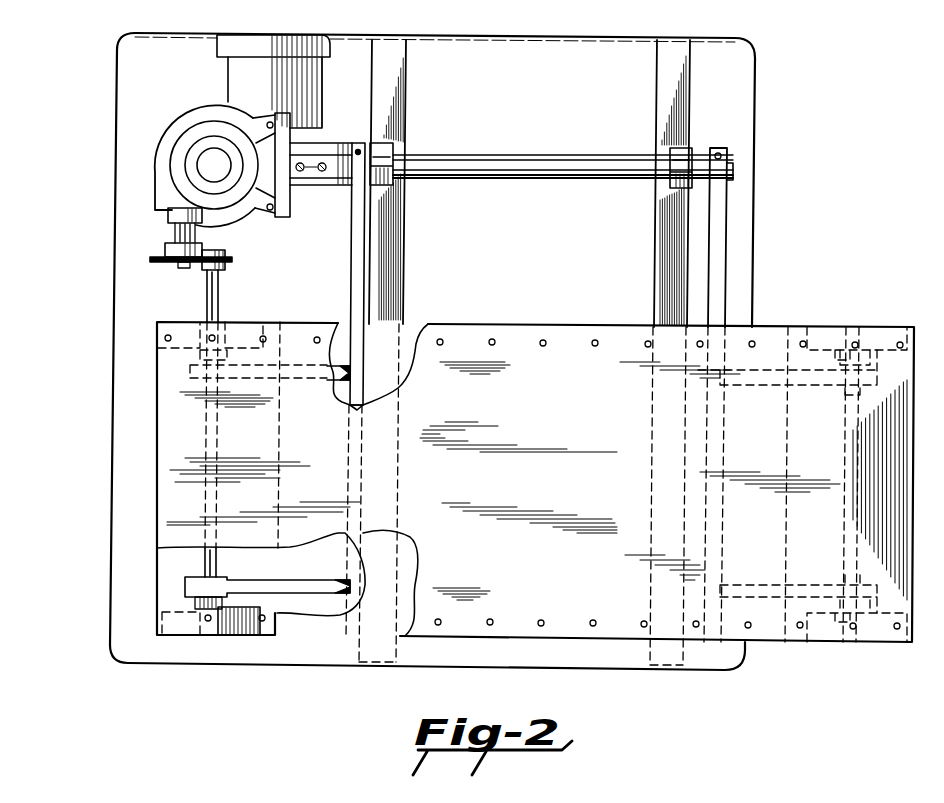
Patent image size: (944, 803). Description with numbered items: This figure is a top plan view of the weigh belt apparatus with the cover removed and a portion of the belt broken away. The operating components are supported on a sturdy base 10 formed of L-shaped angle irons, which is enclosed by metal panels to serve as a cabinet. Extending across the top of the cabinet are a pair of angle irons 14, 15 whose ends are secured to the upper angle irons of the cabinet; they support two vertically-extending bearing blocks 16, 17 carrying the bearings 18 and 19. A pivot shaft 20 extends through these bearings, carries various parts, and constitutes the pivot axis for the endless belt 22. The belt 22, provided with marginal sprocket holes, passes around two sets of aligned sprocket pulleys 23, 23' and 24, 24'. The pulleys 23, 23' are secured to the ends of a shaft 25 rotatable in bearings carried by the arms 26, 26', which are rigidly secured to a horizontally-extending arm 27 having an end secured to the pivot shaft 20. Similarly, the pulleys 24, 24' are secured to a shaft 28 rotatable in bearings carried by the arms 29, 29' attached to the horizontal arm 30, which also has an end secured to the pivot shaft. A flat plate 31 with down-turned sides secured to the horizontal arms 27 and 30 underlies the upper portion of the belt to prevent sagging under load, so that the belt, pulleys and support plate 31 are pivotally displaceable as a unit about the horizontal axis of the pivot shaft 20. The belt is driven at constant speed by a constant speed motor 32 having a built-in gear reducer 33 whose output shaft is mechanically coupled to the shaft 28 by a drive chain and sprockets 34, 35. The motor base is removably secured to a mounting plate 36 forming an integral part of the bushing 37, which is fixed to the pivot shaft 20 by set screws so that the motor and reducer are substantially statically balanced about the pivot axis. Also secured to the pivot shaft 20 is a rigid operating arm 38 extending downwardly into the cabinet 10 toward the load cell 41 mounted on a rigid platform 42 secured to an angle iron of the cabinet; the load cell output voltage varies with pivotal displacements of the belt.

The base 10 is at (96, 233).
The angle iron 14 is at (400, 412).
The angle iron 15 is at (650, 402).
The bearing block 16 is at (383, 145).
The bearing block 17 is at (682, 150).
The bearing 18 is at (394, 184).
The bearing 19 is at (668, 152).
The pivot shaft 20 is at (497, 157).
The endless belt 22 is at (612, 632).
The sprocket pulley 23 is at (857, 647).
The sprocket pulley 23' is at (865, 326).
The sprocket pulley 24 is at (207, 651).
The sprocket pulley 24' is at (169, 357).
The shaft 25 is at (850, 448).
The arm 26 is at (798, 581).
The arm 26' is at (787, 390).
The horizontally-extending arm 27 is at (723, 453).
The shaft 28 is at (220, 293).
The arm 29 is at (267, 577).
The arm 29' is at (270, 395).
The horizontal arm 30 is at (348, 443).
The flat plate 31 is at (377, 623).
The constant speed motor 32 is at (172, 134).
The gear reducer 33 is at (168, 216).
The drive chain and sprockets 34 is at (160, 263).
The drive chain and sprockets 35 is at (228, 257).
The mounting plate 36 is at (293, 136).
The bushing 37 is at (316, 188).
The operating arm 38 is at (343, 188).
The load cell 41 is at (228, 78).
The rigid platform 42 is at (265, 45).